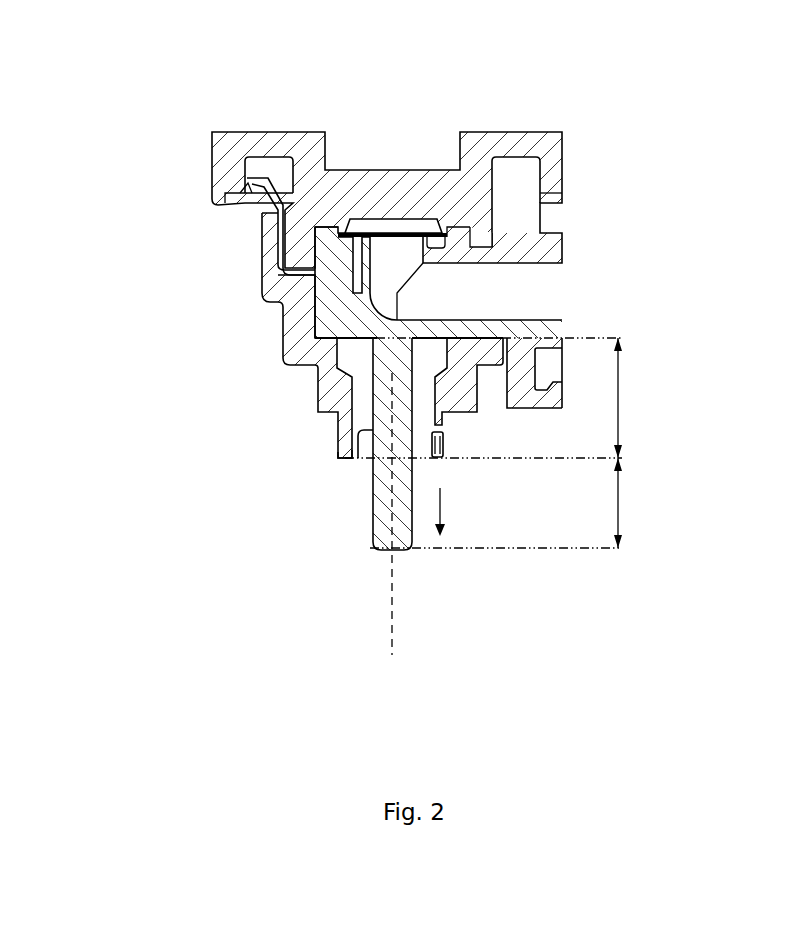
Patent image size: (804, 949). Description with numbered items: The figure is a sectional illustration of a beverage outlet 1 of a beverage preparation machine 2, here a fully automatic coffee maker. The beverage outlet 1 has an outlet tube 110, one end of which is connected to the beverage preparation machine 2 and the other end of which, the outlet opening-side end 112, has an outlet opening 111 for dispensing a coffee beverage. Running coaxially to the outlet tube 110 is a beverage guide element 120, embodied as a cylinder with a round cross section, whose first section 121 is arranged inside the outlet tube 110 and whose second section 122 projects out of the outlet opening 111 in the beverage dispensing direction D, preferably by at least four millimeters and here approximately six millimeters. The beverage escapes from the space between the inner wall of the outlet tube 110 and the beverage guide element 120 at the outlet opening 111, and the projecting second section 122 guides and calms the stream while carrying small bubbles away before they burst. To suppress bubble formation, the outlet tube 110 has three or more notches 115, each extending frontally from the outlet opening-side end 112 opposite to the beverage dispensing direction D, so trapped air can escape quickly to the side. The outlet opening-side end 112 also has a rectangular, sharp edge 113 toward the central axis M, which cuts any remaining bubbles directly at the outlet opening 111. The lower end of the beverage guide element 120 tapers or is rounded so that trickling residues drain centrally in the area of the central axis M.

The beverage outlet 1 is at (326, 421).
The beverage preparation machine 2 is at (578, 117).
The outlet tube 110 is at (337, 432).
The outlet opening 111 is at (420, 458).
The outlet opening-side end 112 is at (340, 456).
The sharp edge 113 is at (351, 457).
The notch 115 is at (367, 449).
The beverage guide element 120 is at (407, 532).
The first section 121 is at (638, 398).
The second section 122 is at (639, 503).
The central axis M is at (388, 536).
The beverage dispensing direction D is at (453, 512).